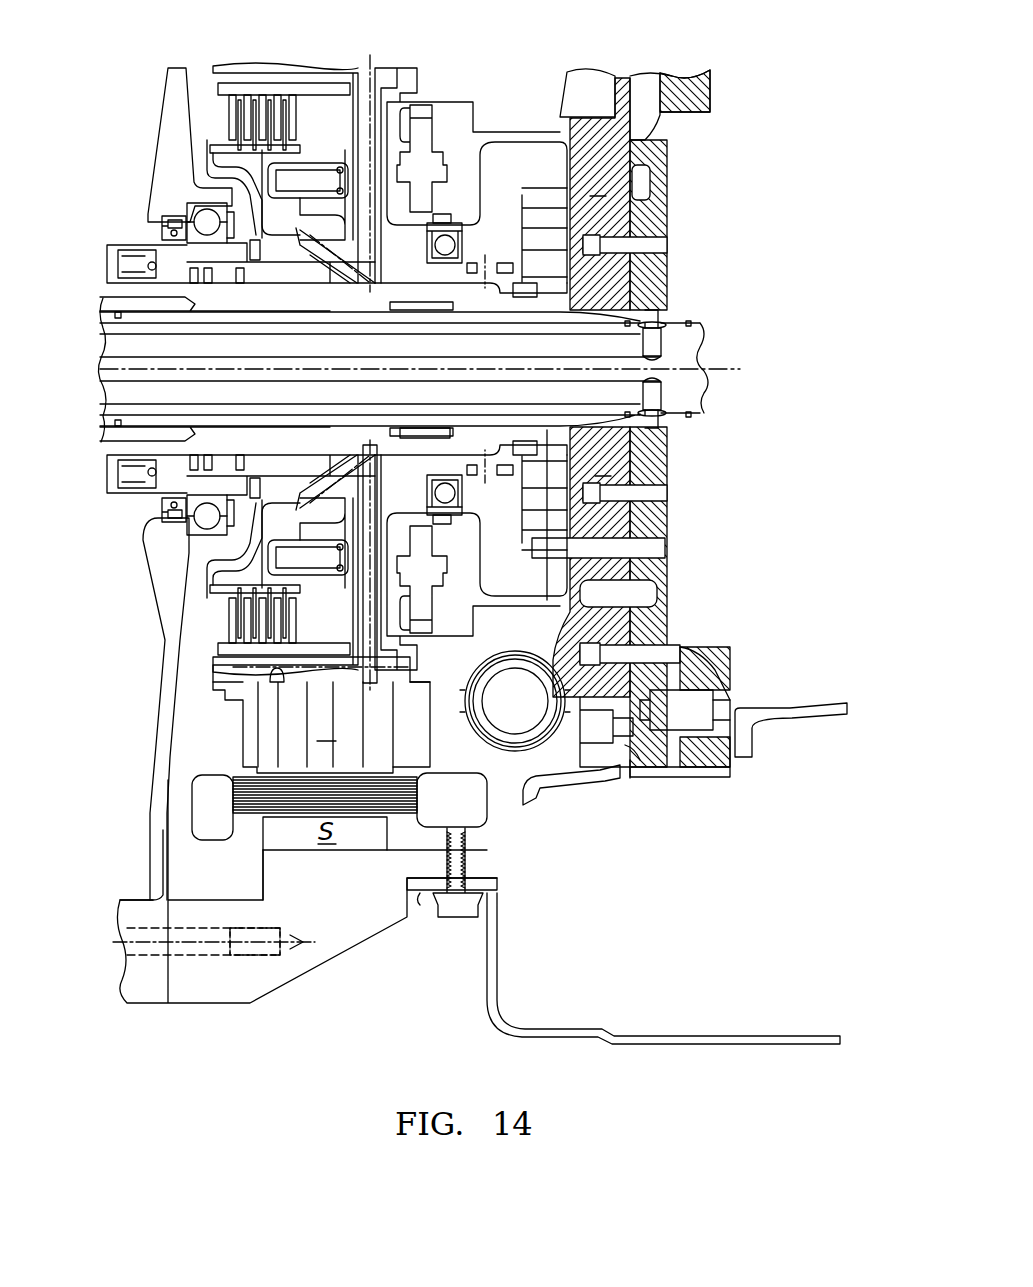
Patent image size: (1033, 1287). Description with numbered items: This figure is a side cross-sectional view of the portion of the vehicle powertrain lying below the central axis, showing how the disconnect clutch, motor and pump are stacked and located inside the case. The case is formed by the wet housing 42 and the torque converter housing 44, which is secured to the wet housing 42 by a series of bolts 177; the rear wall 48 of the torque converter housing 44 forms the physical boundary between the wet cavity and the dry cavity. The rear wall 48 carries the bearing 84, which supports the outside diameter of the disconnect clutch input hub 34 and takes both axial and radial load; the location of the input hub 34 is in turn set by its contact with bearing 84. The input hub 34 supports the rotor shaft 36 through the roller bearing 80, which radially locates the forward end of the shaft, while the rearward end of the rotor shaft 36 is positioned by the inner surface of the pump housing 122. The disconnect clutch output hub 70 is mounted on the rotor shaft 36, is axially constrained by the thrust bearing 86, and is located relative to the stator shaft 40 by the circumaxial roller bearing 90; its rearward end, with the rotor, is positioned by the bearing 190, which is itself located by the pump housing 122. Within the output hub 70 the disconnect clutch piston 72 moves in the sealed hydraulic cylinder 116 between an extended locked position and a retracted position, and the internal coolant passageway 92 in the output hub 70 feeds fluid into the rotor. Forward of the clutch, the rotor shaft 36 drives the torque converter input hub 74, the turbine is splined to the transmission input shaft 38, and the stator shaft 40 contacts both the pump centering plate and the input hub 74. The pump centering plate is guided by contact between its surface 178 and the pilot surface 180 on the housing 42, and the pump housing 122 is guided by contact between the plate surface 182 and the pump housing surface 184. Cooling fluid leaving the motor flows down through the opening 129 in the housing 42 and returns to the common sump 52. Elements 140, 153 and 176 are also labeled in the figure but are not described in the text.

The disconnect clutch input hub 34 is at (222, 258).
The rotor shaft 36 is at (210, 290).
The transmission input shaft 38 is at (530, 393).
The stator shaft 40 is at (550, 318).
The wet housing 42 is at (200, 985).
The torque converter housing 44 is at (138, 988).
The rear wall 48 is at (160, 757).
The sump 52 is at (520, 995).
The disconnect clutch output hub 70 is at (417, 253).
The disconnect clutch piston 72 is at (337, 555).
The torque converter input hub 74 is at (118, 305).
The roller bearing 80 is at (212, 458).
The bearing 84 is at (205, 516).
The thrust bearing 86 is at (253, 470).
The circumaxial roller bearing 90 is at (418, 432).
The coolant passageway 92 is at (370, 488).
The hydraulic cylinder 116 is at (325, 539).
The pump housing 122 is at (547, 176).
The opening 129 is at (523, 793).
The input shaft 140 is at (712, 357).
The ring gear carrier 153 is at (257, 770).
The spline 176 is at (290, 770).
The bolts 177 is at (230, 960).
The surface 178 is at (618, 777).
The pilot surface 180 is at (637, 750).
The surface 182 is at (545, 640).
The surface 184 is at (507, 608).
The bearing 190 is at (445, 242).